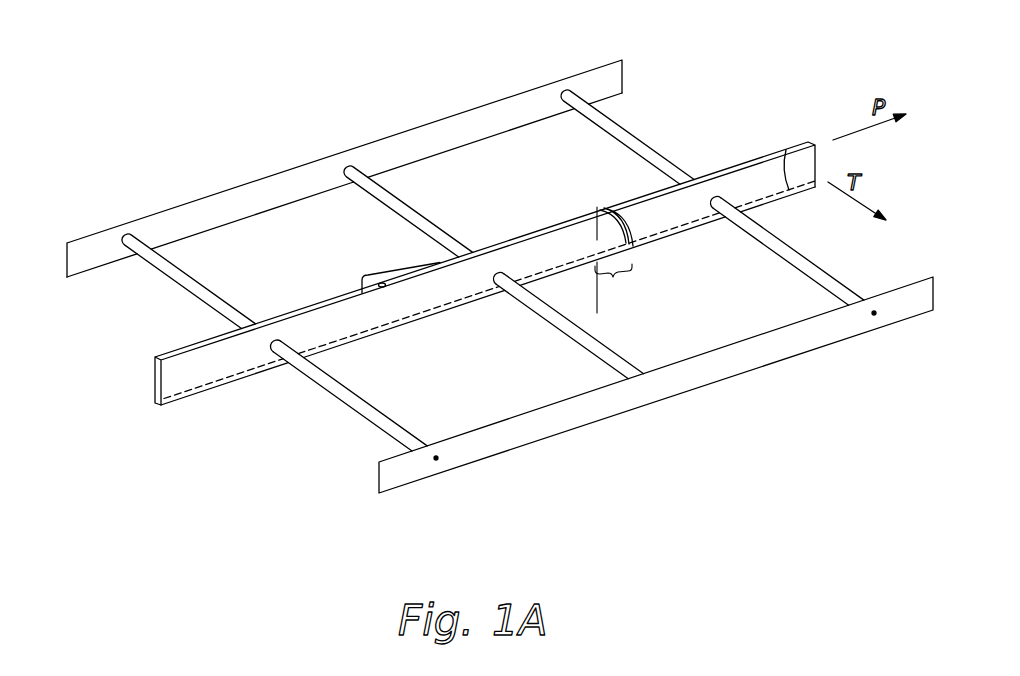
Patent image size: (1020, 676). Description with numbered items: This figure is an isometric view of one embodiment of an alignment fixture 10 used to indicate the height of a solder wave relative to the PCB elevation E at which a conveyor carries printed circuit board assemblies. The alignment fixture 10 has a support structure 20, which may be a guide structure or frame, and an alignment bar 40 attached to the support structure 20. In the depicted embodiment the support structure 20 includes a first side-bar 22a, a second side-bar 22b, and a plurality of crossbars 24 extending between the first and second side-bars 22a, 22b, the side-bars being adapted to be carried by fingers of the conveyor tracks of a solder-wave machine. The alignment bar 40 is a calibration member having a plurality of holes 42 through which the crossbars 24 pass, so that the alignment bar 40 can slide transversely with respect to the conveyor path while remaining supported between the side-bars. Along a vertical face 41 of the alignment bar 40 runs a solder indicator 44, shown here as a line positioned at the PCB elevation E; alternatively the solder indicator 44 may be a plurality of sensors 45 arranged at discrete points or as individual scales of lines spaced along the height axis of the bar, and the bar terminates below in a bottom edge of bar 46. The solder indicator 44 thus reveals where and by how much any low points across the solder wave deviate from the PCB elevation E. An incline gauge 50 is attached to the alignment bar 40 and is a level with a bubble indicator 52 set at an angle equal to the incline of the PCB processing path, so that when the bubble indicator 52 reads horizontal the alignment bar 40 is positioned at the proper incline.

The alignment fixture 10 is at (313, 98).
The support structure 20 is at (160, 304).
The first side-bar 22a is at (473, 118).
The second side-bar 22b is at (762, 368).
The crossbars 24 is at (228, 305).
The alignment bar 40 is at (482, 277).
The vertical face 41 is at (207, 378).
The holes 42 is at (283, 340).
The solder indicator 44 is at (717, 170).
The sensors 45 is at (605, 208).
The bottom edge of bar 46 is at (225, 388).
The incline gauge 50 is at (394, 304).
The bubble indicator 52 is at (383, 292).